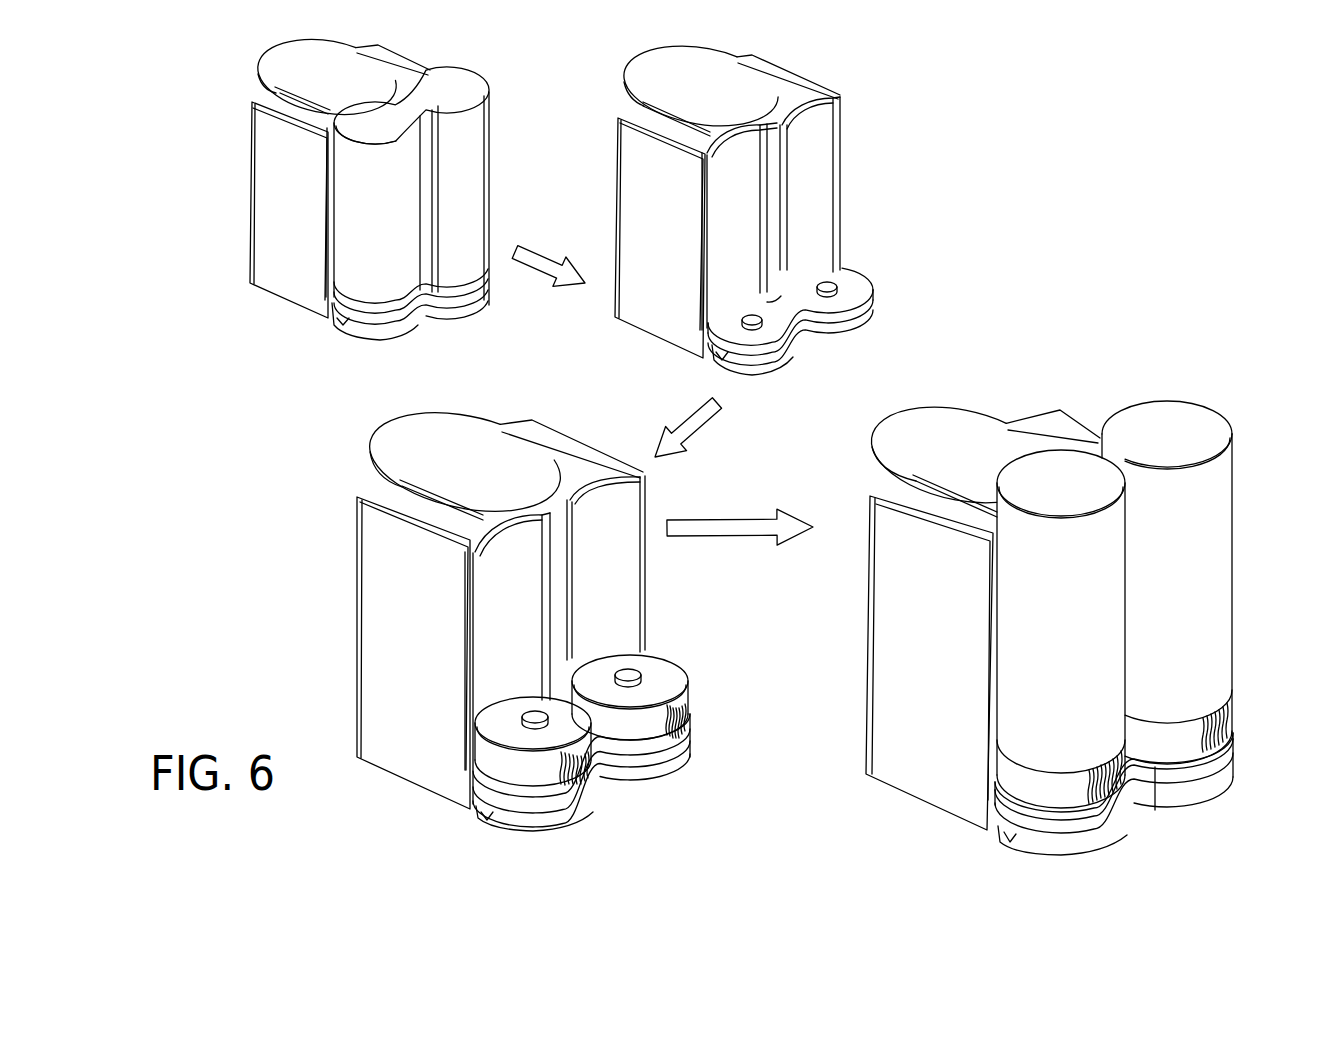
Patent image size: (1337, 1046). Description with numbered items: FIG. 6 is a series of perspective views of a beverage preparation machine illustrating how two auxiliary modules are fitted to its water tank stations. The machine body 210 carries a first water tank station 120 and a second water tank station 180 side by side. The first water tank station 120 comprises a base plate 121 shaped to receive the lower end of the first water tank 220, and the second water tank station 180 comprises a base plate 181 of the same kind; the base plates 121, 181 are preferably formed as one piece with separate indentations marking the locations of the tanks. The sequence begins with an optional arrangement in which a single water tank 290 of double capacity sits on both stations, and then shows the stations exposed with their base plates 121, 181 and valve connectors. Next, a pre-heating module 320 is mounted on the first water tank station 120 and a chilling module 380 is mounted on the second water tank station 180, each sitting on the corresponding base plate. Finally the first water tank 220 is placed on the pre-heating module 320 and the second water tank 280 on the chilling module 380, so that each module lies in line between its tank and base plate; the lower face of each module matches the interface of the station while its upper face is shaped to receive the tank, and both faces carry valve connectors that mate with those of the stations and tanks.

The housing 210 is at (268, 172).
The single water tank 290 is at (355, 238).
The base plate 181 is at (850, 292).
The base plate 121 is at (756, 340).
The pre-heating module 320 is at (478, 750).
The chilling module 380 is at (658, 672).
The first water tank 220 is at (1112, 587).
The second water tank 280 is at (1218, 549).
The second water tank station 180 is at (1236, 760).
The first water tank station 120 is at (1080, 830).